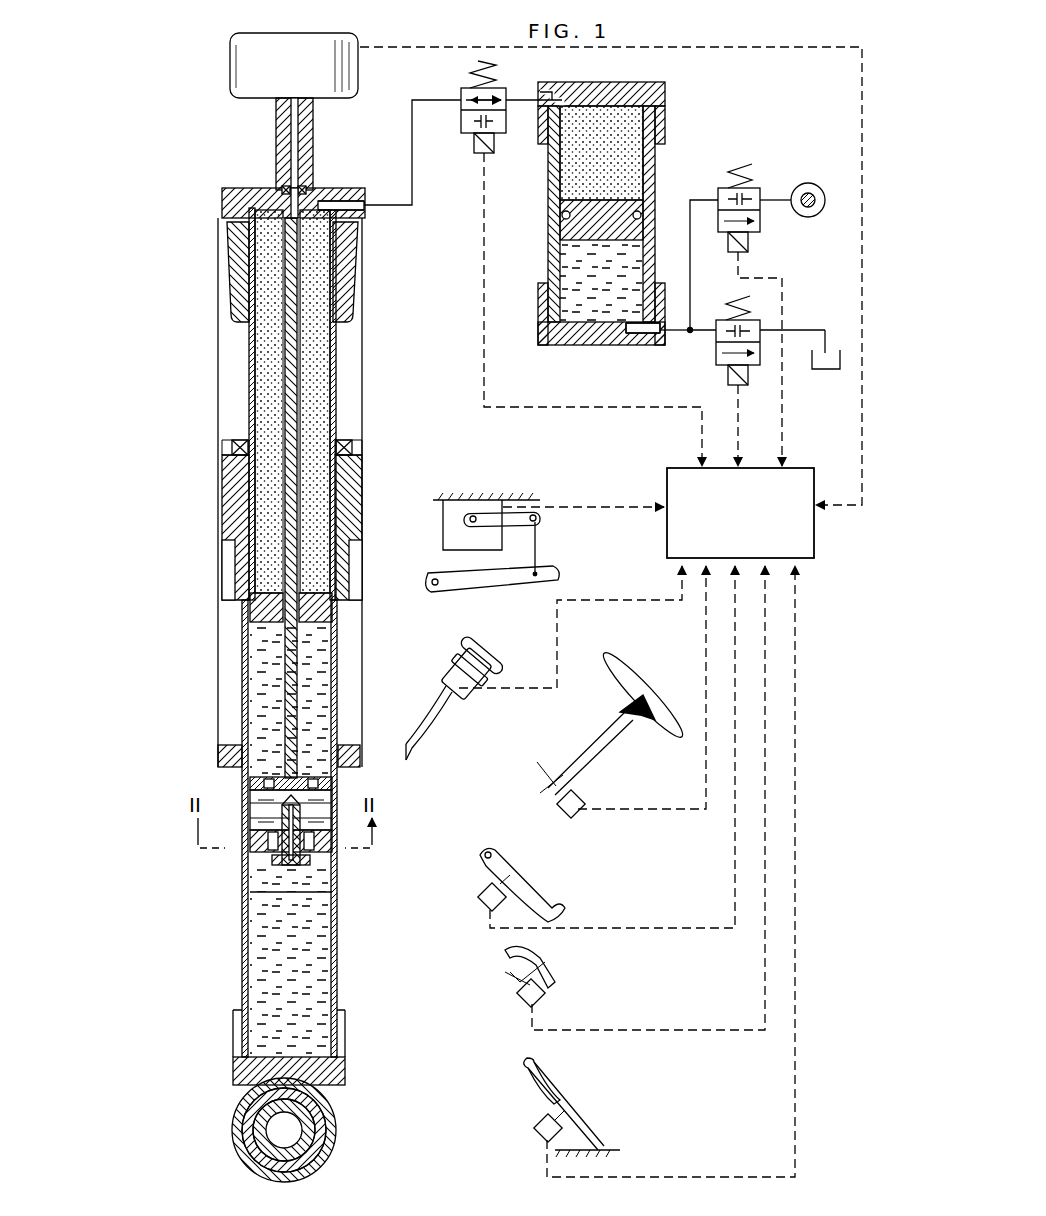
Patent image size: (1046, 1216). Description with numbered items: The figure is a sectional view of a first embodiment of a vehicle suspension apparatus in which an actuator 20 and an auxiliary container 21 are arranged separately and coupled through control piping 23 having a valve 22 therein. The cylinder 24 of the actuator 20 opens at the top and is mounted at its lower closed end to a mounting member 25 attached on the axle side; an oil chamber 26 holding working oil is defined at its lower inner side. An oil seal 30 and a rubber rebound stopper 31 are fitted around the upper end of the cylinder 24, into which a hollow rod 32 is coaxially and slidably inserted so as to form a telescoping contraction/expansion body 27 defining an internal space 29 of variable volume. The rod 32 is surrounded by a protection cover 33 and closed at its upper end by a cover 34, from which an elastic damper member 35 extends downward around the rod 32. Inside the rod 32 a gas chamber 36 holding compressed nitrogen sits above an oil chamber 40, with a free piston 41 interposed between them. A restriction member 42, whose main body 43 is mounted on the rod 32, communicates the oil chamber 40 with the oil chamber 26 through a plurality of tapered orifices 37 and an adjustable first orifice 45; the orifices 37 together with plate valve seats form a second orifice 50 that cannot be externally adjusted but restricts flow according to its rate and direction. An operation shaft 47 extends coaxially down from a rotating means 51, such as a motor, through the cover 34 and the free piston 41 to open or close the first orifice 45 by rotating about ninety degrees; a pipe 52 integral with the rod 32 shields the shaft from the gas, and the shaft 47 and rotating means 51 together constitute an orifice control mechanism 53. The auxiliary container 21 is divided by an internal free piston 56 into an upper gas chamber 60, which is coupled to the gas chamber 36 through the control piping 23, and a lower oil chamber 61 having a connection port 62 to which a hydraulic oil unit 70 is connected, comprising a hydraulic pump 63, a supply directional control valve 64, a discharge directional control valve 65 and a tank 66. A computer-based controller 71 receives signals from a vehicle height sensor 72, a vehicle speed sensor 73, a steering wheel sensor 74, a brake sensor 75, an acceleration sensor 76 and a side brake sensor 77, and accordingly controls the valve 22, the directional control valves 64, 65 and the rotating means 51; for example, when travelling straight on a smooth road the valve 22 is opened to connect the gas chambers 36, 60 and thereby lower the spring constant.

The actuator 20 is at (216, 425).
The auxiliary container 21 is at (664, 188).
The valve 22 is at (470, 147).
The control piping 23 is at (432, 98).
The cylinder 24 is at (244, 676).
The mounting member 25 is at (233, 1130).
The oil chamber 26 is at (260, 951).
The contraction/expansion body 27 is at (350, 735).
The internal space 29 is at (315, 481).
The oil seal 30 is at (232, 448).
The rebound stopper 31 is at (232, 566).
The hollow rod 32 is at (250, 359).
The protection cover 33 is at (218, 307).
The cover 34 is at (236, 190).
The damper member 35 is at (229, 258).
The gas chamber 36 is at (268, 484).
The orifices 37 is at (307, 860).
The oil chamber 40 is at (262, 718).
The free piston 41 is at (268, 612).
The restriction member 42 is at (262, 876).
The restriction member main body 43 is at (312, 842).
The first orifice 45 is at (304, 820).
The operation shaft 47 is at (298, 382).
The second orifice 50 is at (270, 829).
The rotating means 51 is at (309, 40).
The pipe 52 is at (305, 346).
The orifice control mechanism 53 is at (230, 65).
The internal free piston 56 is at (566, 230).
The gas chamber 60 is at (573, 176).
The oil chamber 61 is at (572, 309).
The connection port 62 is at (650, 348).
The hydraulic pump 63 is at (810, 183).
The directional control valve 64 is at (756, 188).
The directional control valve 65 is at (728, 372).
The tank 66 is at (826, 375).
The hydraulic oil unit 70 is at (702, 345).
The controller 71 is at (814, 536).
The vehicle height sensor 72 is at (443, 525).
The vehicle speed sensor 73 is at (446, 676).
The steering wheel sensor 74 is at (556, 812).
The brake sensor 75 is at (480, 895).
The acceleration sensor 76 is at (520, 1002).
The side brake sensor 77 is at (536, 1126).